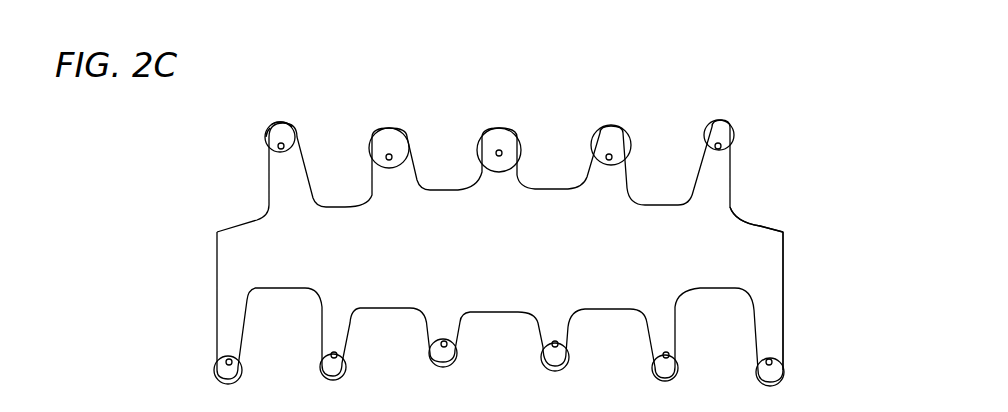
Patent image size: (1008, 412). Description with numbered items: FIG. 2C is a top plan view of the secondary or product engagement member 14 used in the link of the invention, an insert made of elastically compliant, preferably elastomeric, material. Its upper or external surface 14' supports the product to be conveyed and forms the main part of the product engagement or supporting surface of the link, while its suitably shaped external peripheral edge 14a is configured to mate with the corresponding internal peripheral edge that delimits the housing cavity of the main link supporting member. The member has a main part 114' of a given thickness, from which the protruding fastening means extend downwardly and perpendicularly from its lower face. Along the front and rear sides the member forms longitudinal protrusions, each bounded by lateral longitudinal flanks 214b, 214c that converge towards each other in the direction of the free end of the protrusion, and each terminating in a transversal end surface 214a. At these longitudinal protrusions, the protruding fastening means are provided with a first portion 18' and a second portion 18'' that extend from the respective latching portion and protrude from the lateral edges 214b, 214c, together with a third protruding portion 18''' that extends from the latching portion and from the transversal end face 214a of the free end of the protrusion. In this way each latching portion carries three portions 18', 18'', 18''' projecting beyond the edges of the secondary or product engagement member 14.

The secondary or product engagement member 14 is at (459, 218).
The upper or external surface 14' is at (500, 307).
The external peripheral edge 14a is at (783, 260).
The main part 114' is at (809, 288).
The first portion 18' is at (221, 126).
The second portion 18'' is at (314, 96).
The protruding portion 18''' is at (240, 97).
The transversal end surface 214a is at (282, 135).
The lateral longitudinal flank 214b is at (266, 145).
The lateral longitudinal flank 214c is at (296, 150).